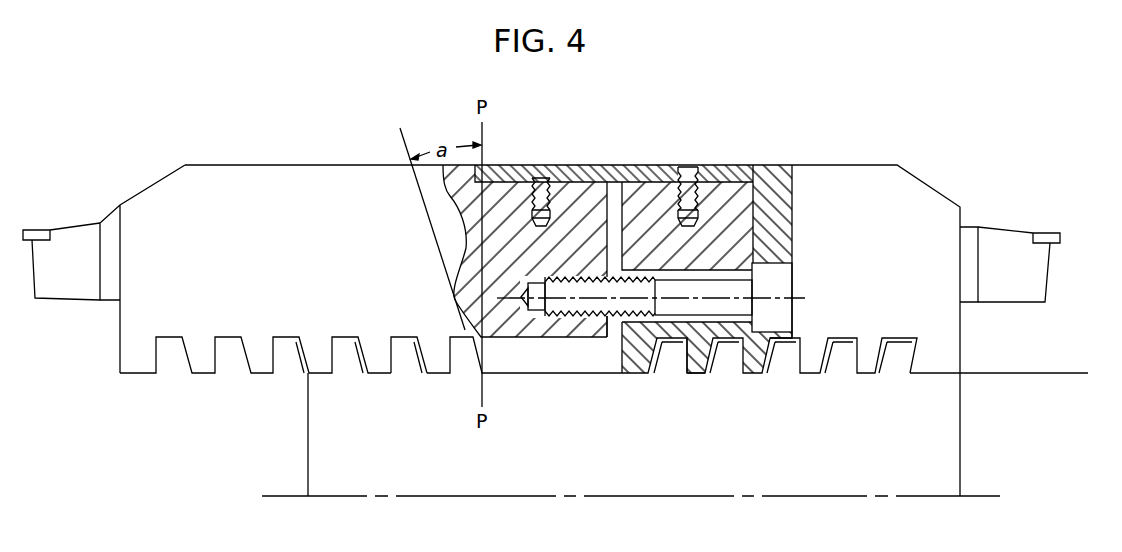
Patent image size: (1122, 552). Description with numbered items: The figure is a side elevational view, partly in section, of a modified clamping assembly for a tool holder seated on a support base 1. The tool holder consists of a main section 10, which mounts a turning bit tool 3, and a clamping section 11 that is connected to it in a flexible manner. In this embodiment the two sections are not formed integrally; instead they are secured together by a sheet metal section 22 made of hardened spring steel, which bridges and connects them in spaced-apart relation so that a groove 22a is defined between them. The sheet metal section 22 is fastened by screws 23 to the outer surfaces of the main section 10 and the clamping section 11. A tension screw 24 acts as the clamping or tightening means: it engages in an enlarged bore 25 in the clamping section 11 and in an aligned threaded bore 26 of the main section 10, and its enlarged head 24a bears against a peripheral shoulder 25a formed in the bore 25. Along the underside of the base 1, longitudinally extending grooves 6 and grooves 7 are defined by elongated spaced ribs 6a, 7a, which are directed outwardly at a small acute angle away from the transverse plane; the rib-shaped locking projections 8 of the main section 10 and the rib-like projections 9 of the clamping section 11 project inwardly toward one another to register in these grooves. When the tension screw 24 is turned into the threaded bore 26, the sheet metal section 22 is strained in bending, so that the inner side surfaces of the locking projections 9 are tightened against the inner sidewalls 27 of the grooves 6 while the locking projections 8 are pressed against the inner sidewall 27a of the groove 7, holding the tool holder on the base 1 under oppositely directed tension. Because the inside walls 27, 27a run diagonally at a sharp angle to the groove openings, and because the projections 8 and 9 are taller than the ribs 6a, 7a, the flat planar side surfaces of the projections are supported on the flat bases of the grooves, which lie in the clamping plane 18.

The support base 1 is at (365, 470).
The turning bit tool 3 is at (72, 242).
The grooves 6 is at (656, 348).
The ribs 6a is at (668, 348).
The grooves 7 is at (352, 368).
The ribs 7a is at (412, 347).
The rib-shaped locking projections 8 is at (441, 347).
The rib-like projections 9 is at (707, 370).
The main section 10 is at (192, 185).
The clamping section 11 is at (760, 352).
The clamping plane 18 is at (1052, 370).
The sheet metal section 22 is at (689, 232).
The groove 22a is at (612, 217).
The screws 23 is at (541, 232).
The tension screw 24 is at (778, 283).
The enlarged head 24a is at (785, 295).
The enlarged bore 25 is at (745, 277).
The peripheral shoulder 25a is at (742, 272).
The threaded bore 26 is at (605, 318).
The inner sidewalls 27 is at (773, 350).
The inner sidewall 27a is at (385, 362).